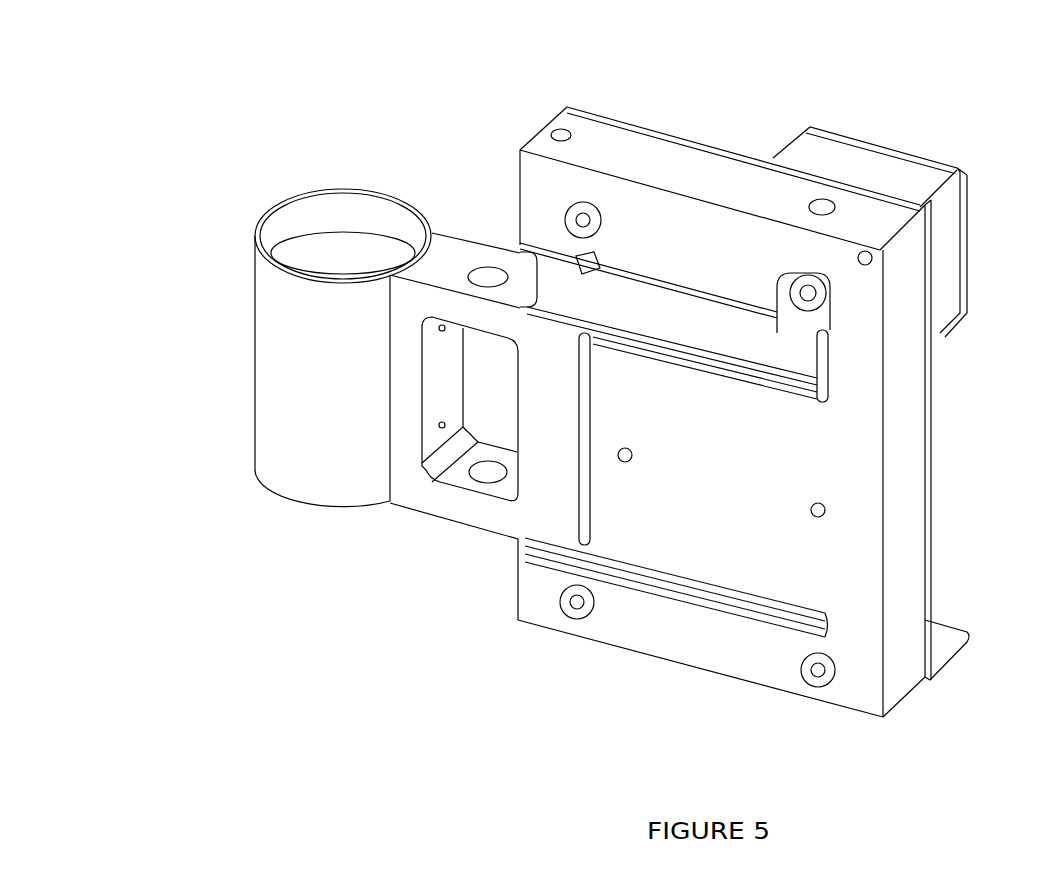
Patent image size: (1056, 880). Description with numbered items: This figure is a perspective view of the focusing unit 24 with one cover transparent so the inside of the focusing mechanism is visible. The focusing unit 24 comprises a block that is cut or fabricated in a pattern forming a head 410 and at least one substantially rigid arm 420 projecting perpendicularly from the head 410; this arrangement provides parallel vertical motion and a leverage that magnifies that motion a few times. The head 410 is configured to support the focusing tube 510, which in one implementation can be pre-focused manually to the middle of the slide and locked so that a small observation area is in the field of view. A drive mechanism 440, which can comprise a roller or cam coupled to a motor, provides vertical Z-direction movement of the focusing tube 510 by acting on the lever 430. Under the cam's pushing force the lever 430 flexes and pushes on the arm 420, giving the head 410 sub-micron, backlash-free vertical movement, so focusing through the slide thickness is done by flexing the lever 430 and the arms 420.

The focusing unit 24 is at (416, 74).
The focusing tube 510 is at (272, 373).
The head 410 is at (472, 523).
The drive mechanism 440 is at (831, 294).
The lever 430 is at (774, 349).
The substantially rigid arm 420 is at (826, 403).